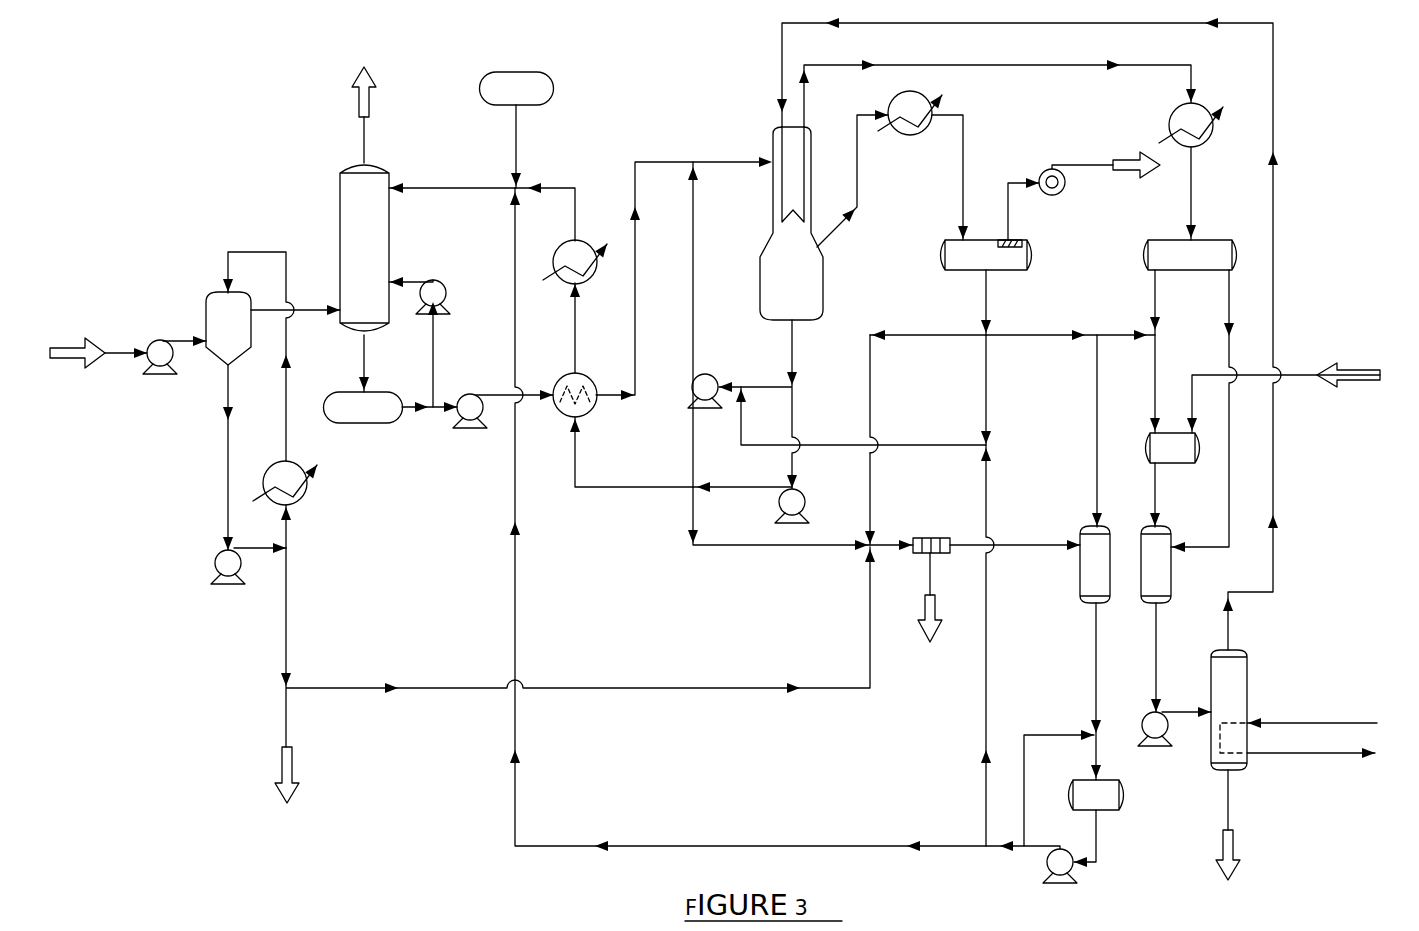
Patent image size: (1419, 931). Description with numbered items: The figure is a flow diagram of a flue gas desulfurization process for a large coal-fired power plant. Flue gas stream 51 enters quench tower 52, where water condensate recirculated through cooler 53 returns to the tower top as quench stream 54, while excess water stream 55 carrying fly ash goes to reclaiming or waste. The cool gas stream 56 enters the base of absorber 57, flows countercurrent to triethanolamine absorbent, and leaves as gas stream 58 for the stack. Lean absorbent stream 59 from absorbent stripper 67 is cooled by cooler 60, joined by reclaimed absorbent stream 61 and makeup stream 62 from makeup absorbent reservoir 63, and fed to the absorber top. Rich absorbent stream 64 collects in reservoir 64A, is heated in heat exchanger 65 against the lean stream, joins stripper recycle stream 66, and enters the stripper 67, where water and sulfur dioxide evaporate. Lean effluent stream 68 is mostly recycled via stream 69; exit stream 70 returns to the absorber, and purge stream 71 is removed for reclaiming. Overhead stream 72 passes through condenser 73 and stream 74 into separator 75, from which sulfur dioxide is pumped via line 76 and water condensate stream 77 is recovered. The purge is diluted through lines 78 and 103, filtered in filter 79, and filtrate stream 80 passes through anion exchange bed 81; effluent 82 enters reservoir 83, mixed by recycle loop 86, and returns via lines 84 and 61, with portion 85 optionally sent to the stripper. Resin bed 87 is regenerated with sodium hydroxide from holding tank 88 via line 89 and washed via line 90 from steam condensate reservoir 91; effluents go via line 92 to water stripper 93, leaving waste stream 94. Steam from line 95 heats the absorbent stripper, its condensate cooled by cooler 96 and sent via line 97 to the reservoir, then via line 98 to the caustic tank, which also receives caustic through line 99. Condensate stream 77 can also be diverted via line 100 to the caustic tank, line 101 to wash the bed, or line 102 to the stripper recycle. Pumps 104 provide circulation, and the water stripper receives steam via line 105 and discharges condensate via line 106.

The flue gas feed stream 51 is at (130, 350).
The quench tower 52 is at (216, 337).
The cooler 53 is at (303, 500).
The quench media stream 54 is at (262, 252).
The excess water stream 55 is at (290, 632).
The cool gas stream 56 is at (295, 311).
The absorber 57 is at (351, 255).
The gas stream 58 is at (362, 130).
The lean absorbent stream 59 is at (456, 186).
The cooler 60 is at (588, 283).
The reclaimed absorbent stream 61 is at (513, 275).
The makeup absorbent stream 62 is at (518, 150).
The makeup absorbent reservoir 63 is at (505, 100).
The rich absorbent stream 64 is at (367, 372).
The reservoir 64A is at (363, 407).
The heat exchanger 65 is at (589, 411).
The stripper recycle stream 66 is at (695, 306).
The absorbent stripper 67 is at (779, 285).
The lean absorbent effluent stream 68 is at (795, 356).
The recycle stream 69 is at (772, 385).
The exit stream 70 is at (797, 479).
The purge stream 71 is at (690, 522).
The overhead stream 72 is at (862, 200).
The condenser 73 is at (904, 136).
The condensed overhead stream 74 is at (966, 133).
The separator 75 is at (974, 267).
The SO2 line 76 is at (1022, 182).
The water condensate stream 77 is at (990, 310).
The dilution line 78 is at (872, 502).
The filter 79 is at (935, 537).
The filtrate stream 80 is at (1045, 543).
The anion exchange bed 81 is at (1078, 578).
The resin bed effluent 82 is at (1094, 645).
The reservoir 83 is at (1085, 807).
The return line 84 is at (1098, 852).
The portion stream 85 is at (806, 446).
The recycle loop 86 is at (1055, 733).
The resin bed 87 is at (1173, 580).
The sodium hydroxide holding tank 88 is at (1161, 460).
The regenerant line 89 is at (1152, 498).
The wash water line 90 is at (1226, 300).
The steam condensate reservoir 91 is at (1179, 267).
The effluent line 92 is at (1164, 711).
The water stripper 93 is at (1218, 702).
The waste stream 94 is at (1226, 800).
The steam line 95 is at (780, 57).
The cooler 96 is at (1208, 106).
The condensate line 97 is at (1000, 64).
The line 98 is at (1150, 292).
The caustic line 99 is at (1292, 372).
The line 100 is at (1110, 333).
The line 101 is at (1095, 460).
The line 102 is at (990, 380).
The line 103 is at (872, 380).
The pumps 104 is at (218, 553).
The steam line 105 is at (1268, 720).
The condensate line 106 is at (1262, 752).